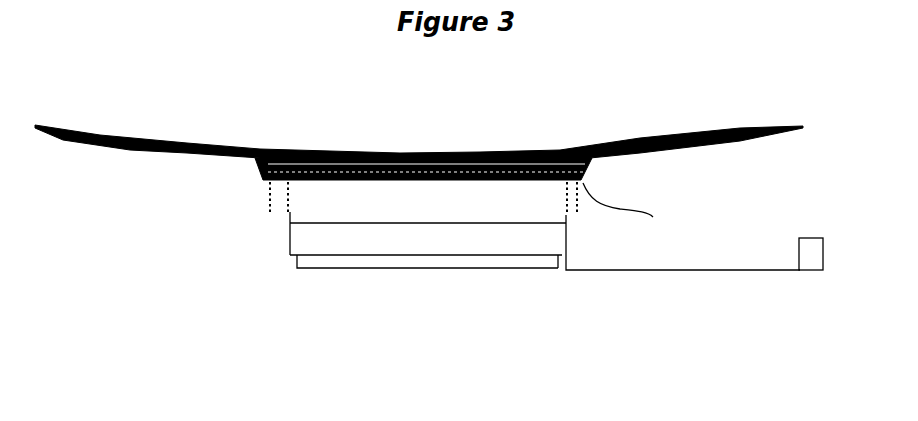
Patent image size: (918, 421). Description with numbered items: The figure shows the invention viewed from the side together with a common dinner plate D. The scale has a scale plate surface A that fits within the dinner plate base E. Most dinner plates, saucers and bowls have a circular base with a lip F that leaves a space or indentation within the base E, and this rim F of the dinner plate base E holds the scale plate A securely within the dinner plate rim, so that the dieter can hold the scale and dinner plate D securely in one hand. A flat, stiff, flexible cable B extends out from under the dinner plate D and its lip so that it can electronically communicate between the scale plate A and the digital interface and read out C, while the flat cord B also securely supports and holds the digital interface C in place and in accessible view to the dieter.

The scale plate A is at (302, 242).
The flexible cable B is at (622, 272).
The digital interface C is at (807, 272).
The dinner plate D is at (717, 127).
The dinner plate base E is at (593, 167).
The lip F is at (630, 212).